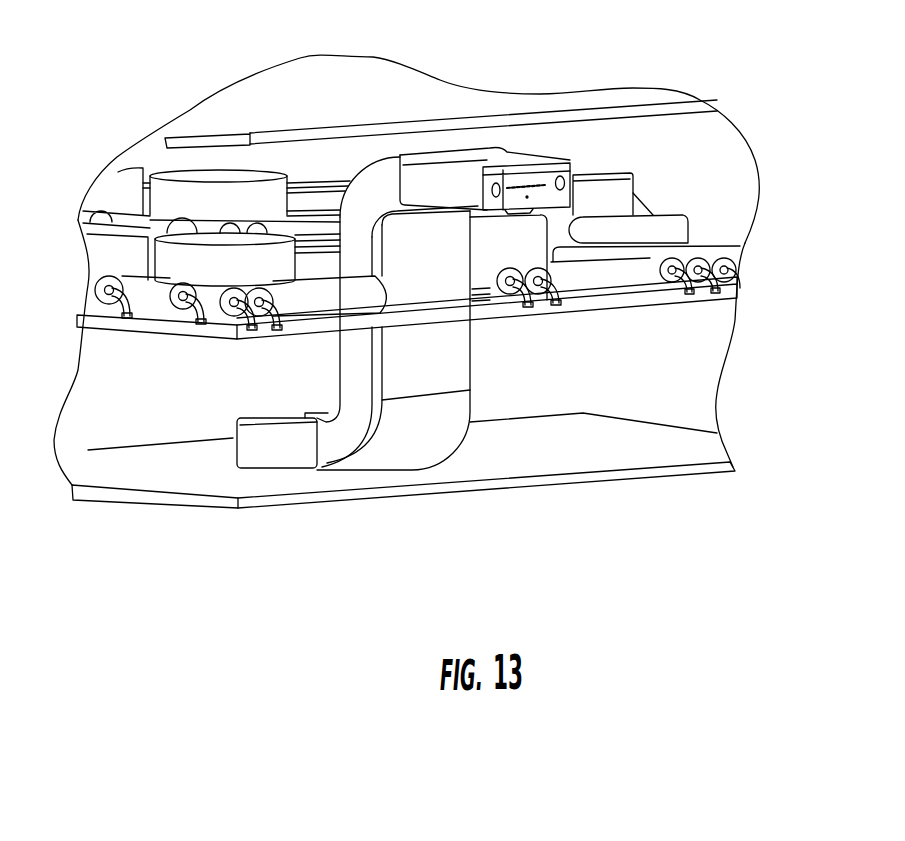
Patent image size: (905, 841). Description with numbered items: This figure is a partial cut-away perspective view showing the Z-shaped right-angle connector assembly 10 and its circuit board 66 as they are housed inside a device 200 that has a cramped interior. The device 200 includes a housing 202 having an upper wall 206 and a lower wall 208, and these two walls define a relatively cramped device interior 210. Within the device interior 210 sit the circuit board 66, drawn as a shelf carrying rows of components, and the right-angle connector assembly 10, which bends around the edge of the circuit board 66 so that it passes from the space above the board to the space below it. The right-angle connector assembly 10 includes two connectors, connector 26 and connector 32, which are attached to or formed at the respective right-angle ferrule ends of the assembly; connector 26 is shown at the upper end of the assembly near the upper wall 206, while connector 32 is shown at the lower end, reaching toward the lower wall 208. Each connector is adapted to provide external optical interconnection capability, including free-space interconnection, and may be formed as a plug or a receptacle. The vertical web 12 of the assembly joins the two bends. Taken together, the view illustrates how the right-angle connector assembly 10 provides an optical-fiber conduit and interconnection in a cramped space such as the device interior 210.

The right-angle connector assembly 10 is at (374, 349).
The clamp web 12 is at (445, 380).
The connector 26 is at (588, 160).
The connector 32 is at (224, 435).
The circuit board 66 is at (658, 307).
The device 200 is at (691, 64).
The housing 202 is at (770, 237).
The upper wall 206 is at (237, 118).
The lower wall 208 is at (117, 496).
The device interior 210 is at (675, 407).